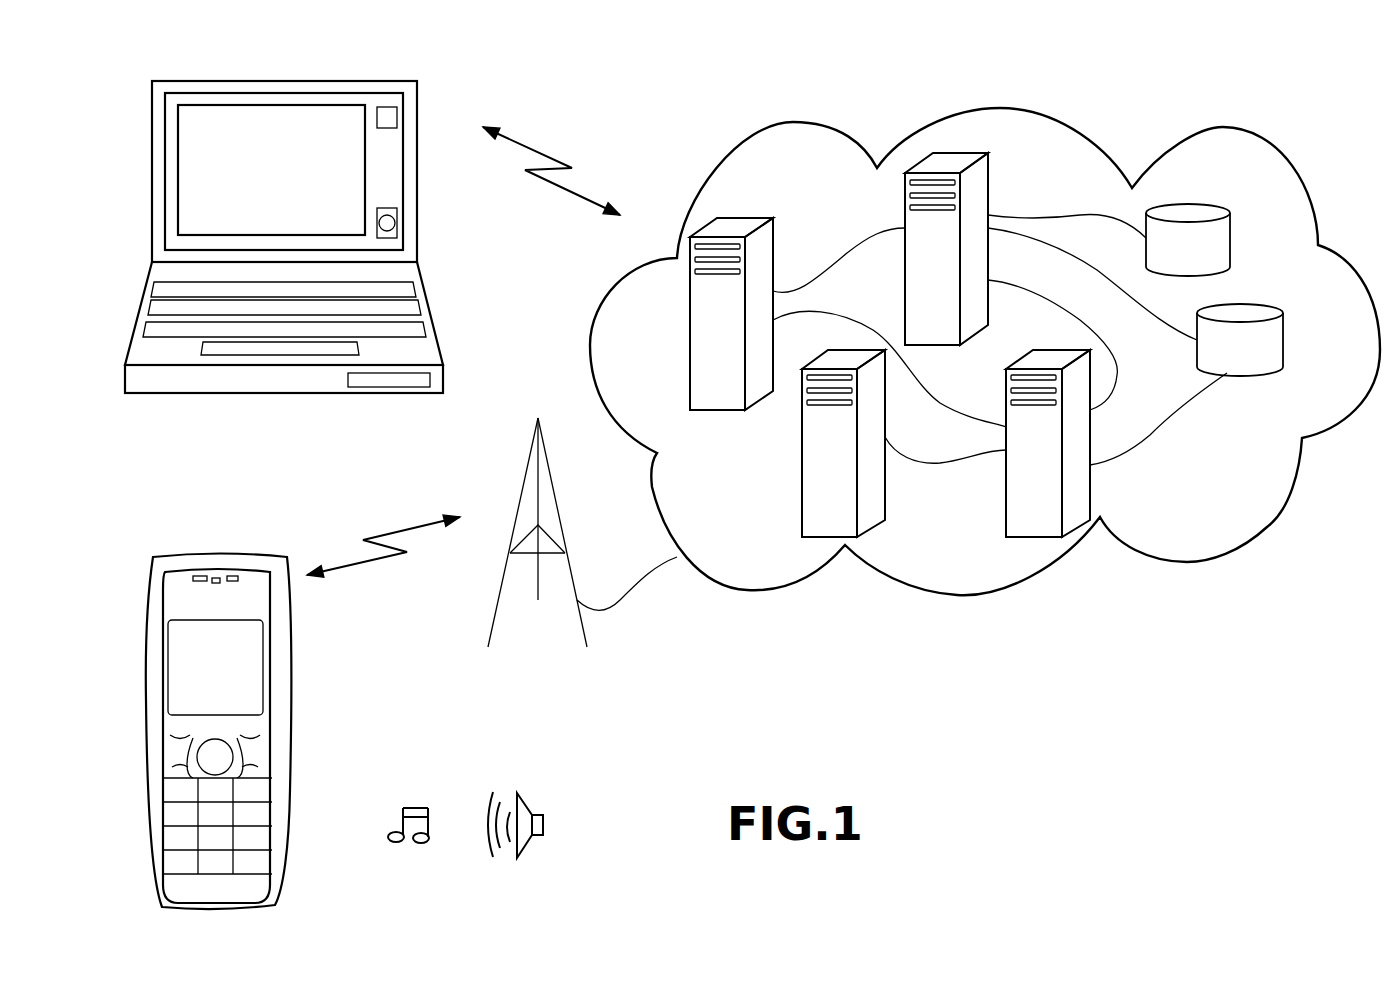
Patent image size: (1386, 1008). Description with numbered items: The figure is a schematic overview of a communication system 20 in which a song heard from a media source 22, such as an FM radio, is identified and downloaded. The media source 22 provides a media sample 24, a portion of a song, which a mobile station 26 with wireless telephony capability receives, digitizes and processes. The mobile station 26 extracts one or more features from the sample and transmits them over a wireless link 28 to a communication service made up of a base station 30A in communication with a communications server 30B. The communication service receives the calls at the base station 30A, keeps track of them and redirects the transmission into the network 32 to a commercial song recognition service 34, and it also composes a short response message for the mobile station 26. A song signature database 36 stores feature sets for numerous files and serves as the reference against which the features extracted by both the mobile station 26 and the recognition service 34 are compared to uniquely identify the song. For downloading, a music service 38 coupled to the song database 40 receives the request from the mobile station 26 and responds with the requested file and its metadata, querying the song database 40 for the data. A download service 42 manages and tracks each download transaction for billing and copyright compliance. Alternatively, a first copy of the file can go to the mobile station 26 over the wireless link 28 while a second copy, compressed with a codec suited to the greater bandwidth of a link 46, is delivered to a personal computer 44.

The communication system 20 is at (905, 653).
The media source 22 is at (540, 813).
The media sample 24 is at (418, 804).
The mobile station 26 is at (292, 677).
The wireless link 28 is at (400, 530).
The base station 30A is at (563, 533).
The communications server 30B is at (697, 374).
The network 32 is at (1023, 585).
The song recognition service 34 is at (918, 311).
The song signature database 36 is at (1173, 260).
The music service 38 is at (1018, 501).
The song database 40 is at (1225, 359).
The download service 42 is at (813, 509).
The personal computer 44 is at (150, 308).
The link 46 is at (542, 152).